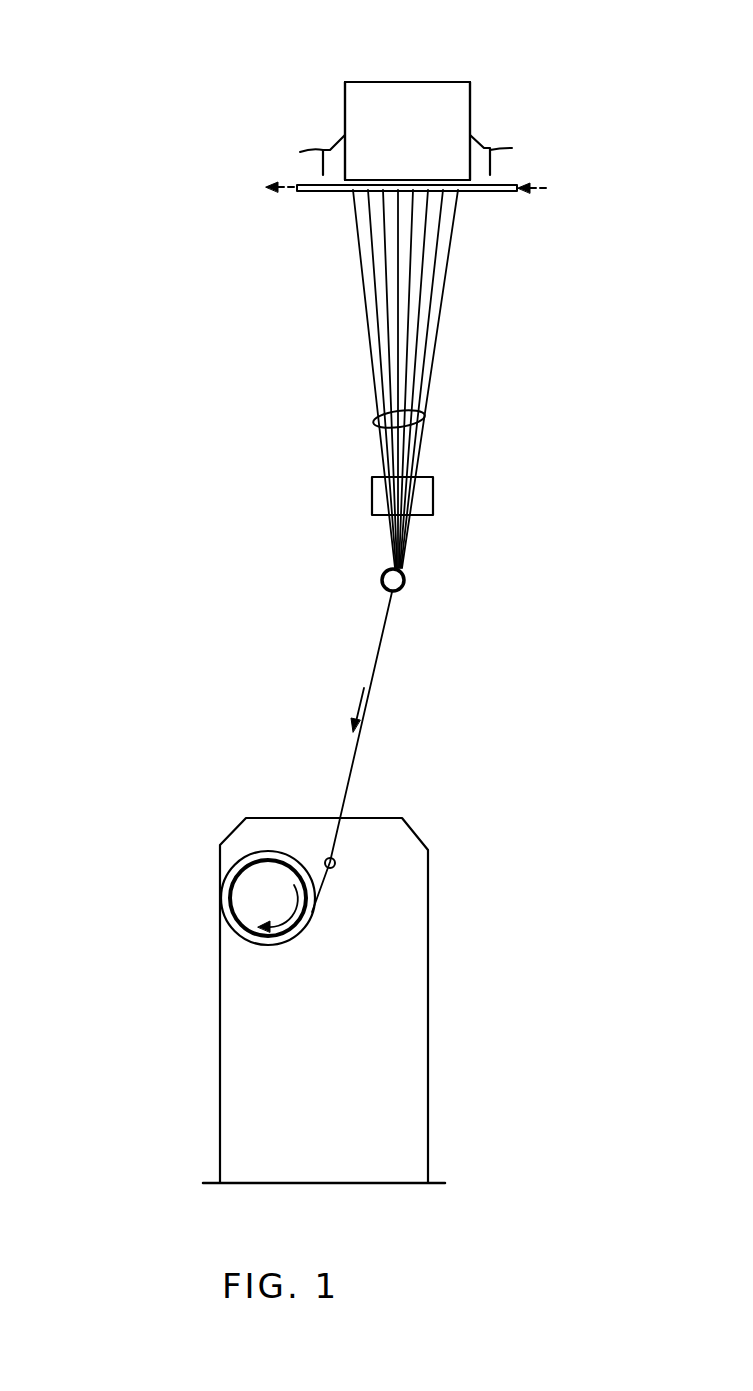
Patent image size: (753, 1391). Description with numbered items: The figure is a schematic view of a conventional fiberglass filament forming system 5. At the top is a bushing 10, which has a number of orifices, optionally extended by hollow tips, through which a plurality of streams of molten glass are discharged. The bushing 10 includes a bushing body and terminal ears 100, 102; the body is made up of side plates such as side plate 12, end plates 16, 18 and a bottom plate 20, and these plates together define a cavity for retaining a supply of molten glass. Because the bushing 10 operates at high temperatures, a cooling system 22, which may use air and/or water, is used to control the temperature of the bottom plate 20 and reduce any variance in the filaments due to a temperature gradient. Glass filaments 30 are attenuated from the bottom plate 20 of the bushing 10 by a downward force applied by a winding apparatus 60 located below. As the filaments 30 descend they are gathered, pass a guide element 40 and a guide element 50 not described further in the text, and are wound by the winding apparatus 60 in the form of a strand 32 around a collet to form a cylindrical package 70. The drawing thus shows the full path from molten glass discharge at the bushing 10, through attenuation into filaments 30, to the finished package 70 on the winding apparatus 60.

The filament forming system 5 is at (150, 400).
The bushing 10 is at (378, 80).
The side plate 12 is at (415, 117).
The end plate 16 is at (343, 102).
The end plate 18 is at (473, 103).
The terminal ear 100 is at (300, 152).
The terminal ear 102 is at (512, 148).
The bottom plate 20 is at (462, 191).
The cooling system 22 is at (321, 197).
The glass filaments 30 is at (425, 421).
The finish applicator 40 is at (430, 478).
The yarn guide 50 is at (382, 571).
The strand 32 is at (386, 624).
The winding apparatus 60 is at (245, 817).
The cylindrical package 70 is at (222, 898).